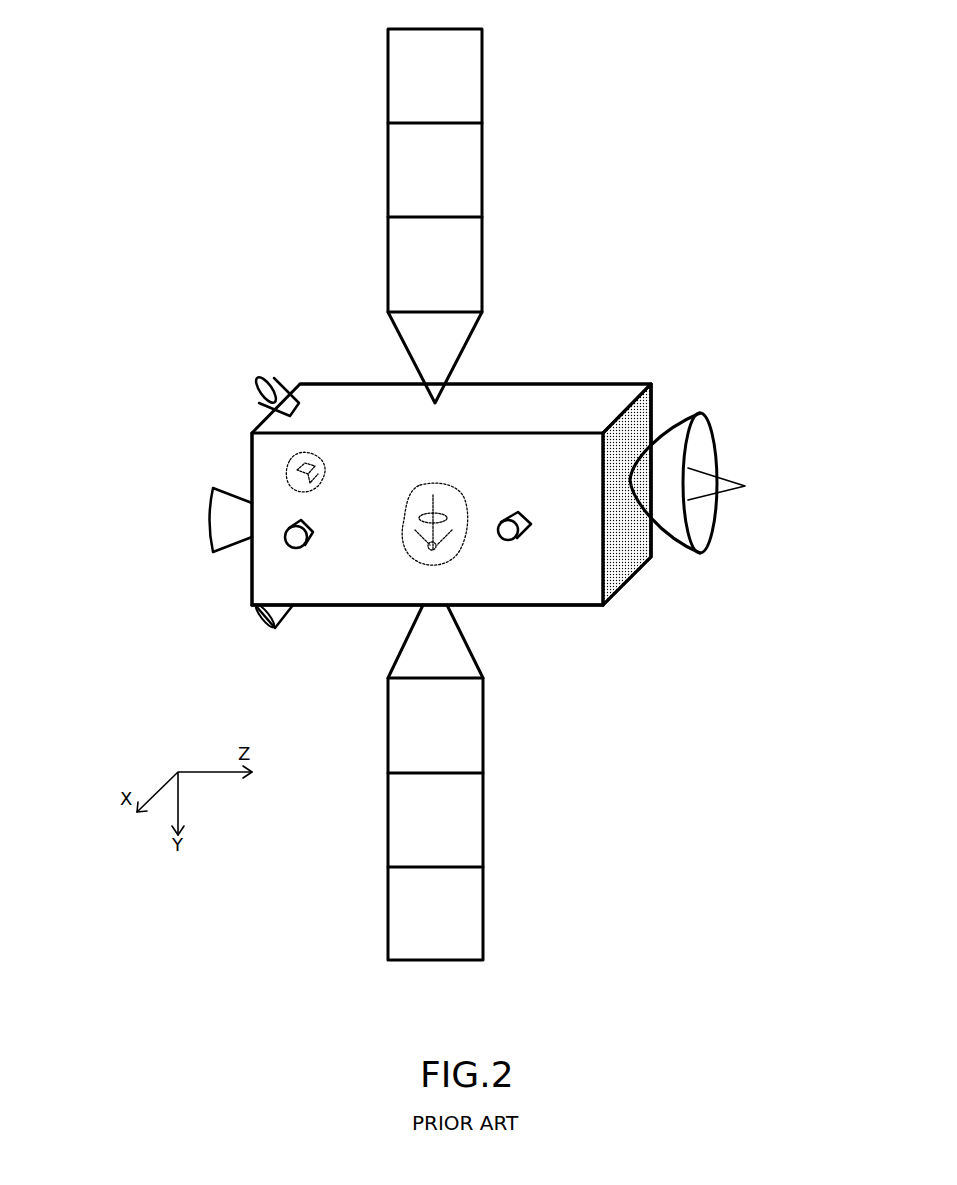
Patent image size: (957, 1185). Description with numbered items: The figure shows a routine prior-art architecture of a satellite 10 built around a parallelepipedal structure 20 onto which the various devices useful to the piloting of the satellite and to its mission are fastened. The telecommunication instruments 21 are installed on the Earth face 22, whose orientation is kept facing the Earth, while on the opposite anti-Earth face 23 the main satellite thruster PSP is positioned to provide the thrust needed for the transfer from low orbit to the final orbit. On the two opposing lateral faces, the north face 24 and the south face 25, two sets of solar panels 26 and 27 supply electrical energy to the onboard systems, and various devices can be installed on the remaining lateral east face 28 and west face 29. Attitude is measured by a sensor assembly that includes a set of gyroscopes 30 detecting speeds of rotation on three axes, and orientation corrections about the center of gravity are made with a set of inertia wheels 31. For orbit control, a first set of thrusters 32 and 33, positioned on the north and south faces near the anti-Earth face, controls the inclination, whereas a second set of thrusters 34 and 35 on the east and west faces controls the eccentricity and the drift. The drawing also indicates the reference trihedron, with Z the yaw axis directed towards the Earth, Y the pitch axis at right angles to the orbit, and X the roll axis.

The satellite 10 is at (636, 236).
The parallelepipedal structure 20 is at (600, 400).
The telecommunication instruments 21 is at (698, 452).
The Earth face 22 is at (622, 565).
The anti-Earth face 23 is at (252, 468).
The north face 24 is at (516, 398).
The south face 25 is at (522, 606).
The solar panels 26 is at (465, 169).
The solar panels 27 is at (460, 816).
The east face 28 is at (382, 585).
The west face 29 is at (658, 412).
The set of gyroscopes 30 is at (320, 482).
The set of inertia wheels 31 is at (452, 505).
The thruster 32 is at (262, 380).
The thruster 33 is at (258, 610).
The thruster 34 is at (285, 538).
The thruster 35 is at (510, 530).
The main satellite thruster PSP is at (218, 517).